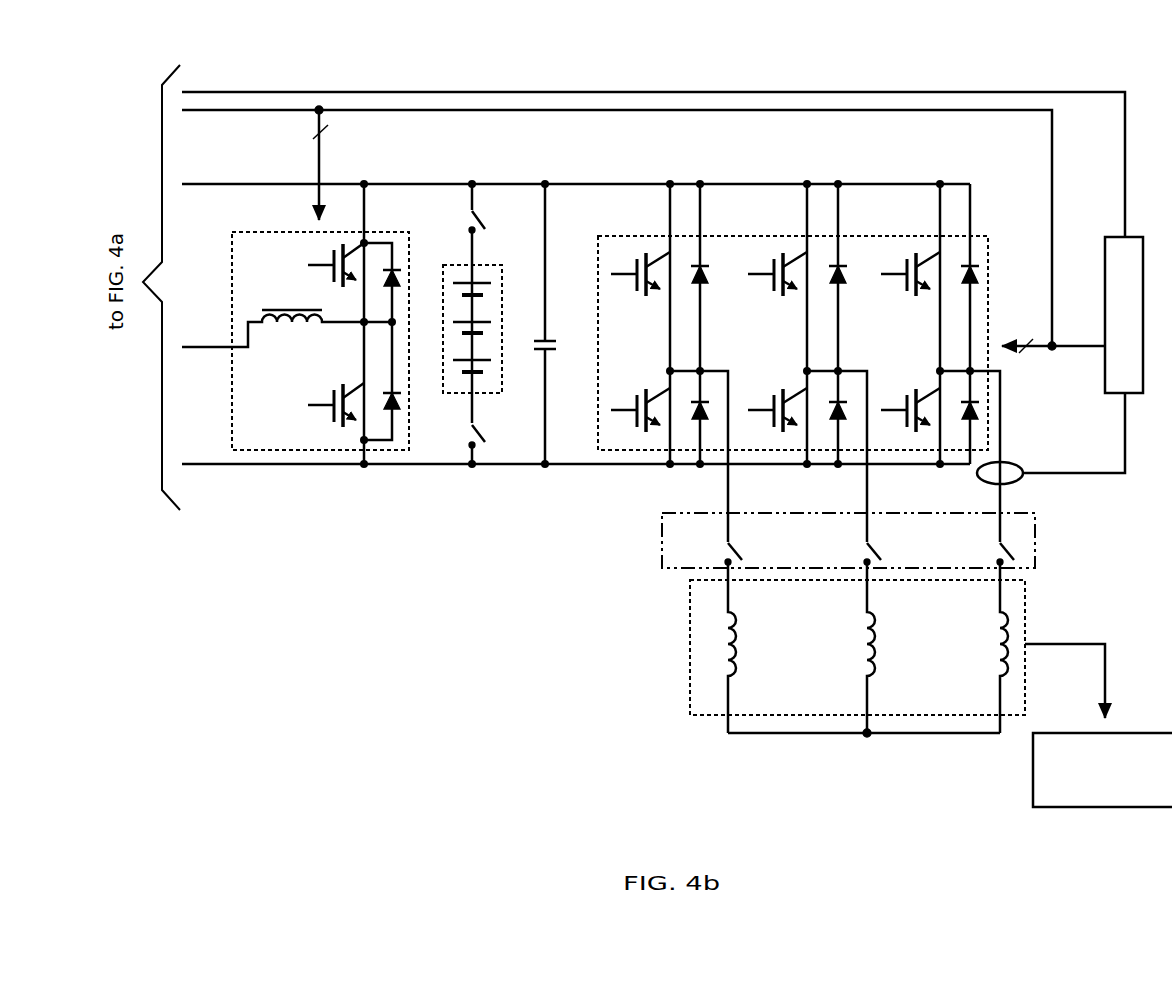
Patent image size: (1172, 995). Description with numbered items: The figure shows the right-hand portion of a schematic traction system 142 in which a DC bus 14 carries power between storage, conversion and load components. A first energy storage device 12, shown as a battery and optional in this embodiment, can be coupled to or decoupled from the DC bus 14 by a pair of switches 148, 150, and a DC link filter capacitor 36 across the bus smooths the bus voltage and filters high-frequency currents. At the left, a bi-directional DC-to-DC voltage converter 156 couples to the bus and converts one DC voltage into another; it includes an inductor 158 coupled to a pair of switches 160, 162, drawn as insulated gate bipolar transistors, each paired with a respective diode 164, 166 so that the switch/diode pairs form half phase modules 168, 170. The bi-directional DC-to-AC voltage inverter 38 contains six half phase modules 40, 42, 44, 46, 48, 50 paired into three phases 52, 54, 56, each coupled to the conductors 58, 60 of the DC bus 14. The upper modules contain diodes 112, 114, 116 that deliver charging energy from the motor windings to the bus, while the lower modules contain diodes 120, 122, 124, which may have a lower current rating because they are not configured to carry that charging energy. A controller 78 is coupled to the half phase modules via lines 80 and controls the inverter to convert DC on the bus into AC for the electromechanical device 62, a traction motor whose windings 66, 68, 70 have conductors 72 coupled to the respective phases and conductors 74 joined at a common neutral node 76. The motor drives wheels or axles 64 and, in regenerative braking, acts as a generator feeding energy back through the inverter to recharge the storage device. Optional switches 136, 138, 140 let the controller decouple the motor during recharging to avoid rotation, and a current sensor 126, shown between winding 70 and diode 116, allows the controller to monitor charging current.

The first energy storage device 12 is at (455, 283).
The DC bus 14 is at (497, 183).
The DC link filter capacitor 36 is at (537, 342).
The bi-directional DC-to-AC voltage inverter 38 is at (598, 238).
The half phase module 40 is at (636, 295).
The half phase module 42 is at (632, 430).
The half phase module 44 is at (773, 295).
The half phase module 46 is at (769, 430).
The half phase module 48 is at (906, 295).
The half phase module 50 is at (902, 430).
The phase 52 is at (663, 223).
The phase 54 is at (800, 223).
The phase 56 is at (933, 223).
The conductor 58 is at (410, 183).
The conductor 60 is at (446, 466).
The electromechanical device 62 is at (690, 616).
The driving wheels or axles 64 is at (1033, 767).
The winding 66 is at (741, 656).
The winding 68 is at (877, 656).
The winding 70 is at (1003, 623).
The conductors 72 is at (732, 607).
The conductors 74 is at (732, 701).
The neutral node 76 is at (784, 735).
The controller 78 is at (1105, 241).
The lines 80 is at (285, 113).
The diode 112 is at (708, 281).
The diode 114 is at (846, 281).
The diode 116 is at (978, 281).
The diode 120 is at (703, 420).
The diode 122 is at (841, 420).
The diode 124 is at (973, 420).
The current sensor 126 is at (1011, 463).
The switch 136 is at (727, 546).
The switch 138 is at (862, 546).
The switch 140 is at (995, 546).
The traction system 142 is at (666, 54).
The switch 148 is at (477, 214).
The switch 150 is at (477, 430).
The bi-directional DC-to-DC voltage converter 156 is at (309, 324).
The inductor 158 is at (322, 332).
The switch 160 is at (312, 268).
The switch 162 is at (312, 407).
The diode 164 is at (395, 268).
The diode 166 is at (390, 392).
The half phase module 168 is at (322, 294).
The half phase module 170 is at (322, 435).